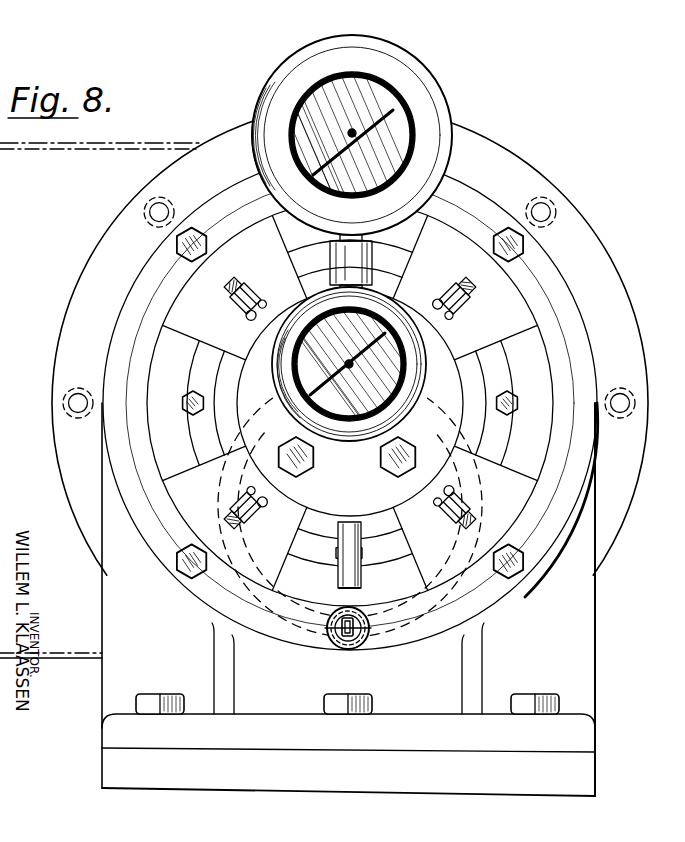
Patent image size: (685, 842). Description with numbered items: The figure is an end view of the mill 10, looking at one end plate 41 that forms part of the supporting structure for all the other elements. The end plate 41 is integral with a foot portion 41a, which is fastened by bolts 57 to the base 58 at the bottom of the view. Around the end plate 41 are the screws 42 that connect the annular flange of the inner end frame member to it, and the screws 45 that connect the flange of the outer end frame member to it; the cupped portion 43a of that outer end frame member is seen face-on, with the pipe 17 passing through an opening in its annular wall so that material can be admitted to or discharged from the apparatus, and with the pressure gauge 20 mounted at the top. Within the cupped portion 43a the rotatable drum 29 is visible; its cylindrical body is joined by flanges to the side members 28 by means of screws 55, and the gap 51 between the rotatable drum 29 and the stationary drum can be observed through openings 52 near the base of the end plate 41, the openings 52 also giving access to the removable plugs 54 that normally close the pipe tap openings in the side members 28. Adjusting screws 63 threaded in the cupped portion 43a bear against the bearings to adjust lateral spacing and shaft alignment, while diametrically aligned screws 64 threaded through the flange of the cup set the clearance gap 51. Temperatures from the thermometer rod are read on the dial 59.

The pump housing 10 is at (383, 425).
The pipe 17 is at (356, 585).
The pressure gauge 20 is at (440, 104).
The side members 28 is at (627, 330).
The rotatable drum 29 is at (130, 457).
The end plates 41 is at (585, 553).
The foot portion 41a is at (586, 741).
The screws 42 is at (184, 406).
The cupped portion 43a is at (446, 415).
The screws 45 is at (176, 244).
The gap 51 is at (348, 642).
The openings 52 is at (362, 644).
The removable plugs 54 is at (336, 642).
The screws 55 is at (144, 208).
The bolts 57 is at (184, 701).
The base 58 is at (588, 778).
The dial 59 is at (280, 372).
The adjusting screws 63 is at (302, 476).
The screws 64 is at (232, 308).